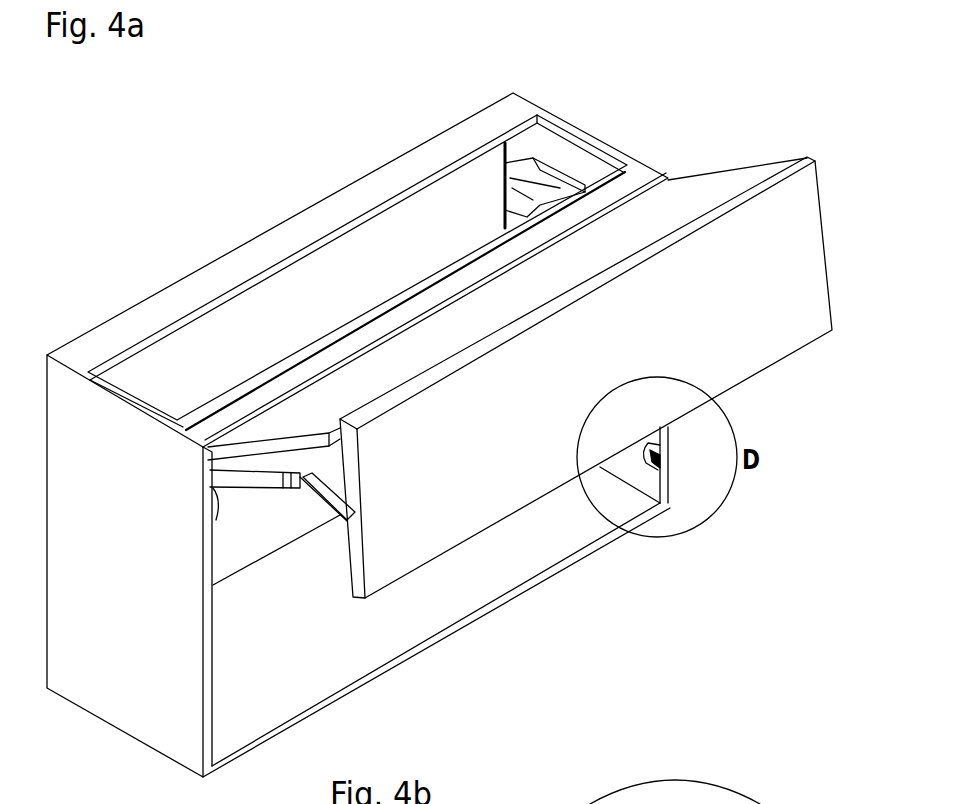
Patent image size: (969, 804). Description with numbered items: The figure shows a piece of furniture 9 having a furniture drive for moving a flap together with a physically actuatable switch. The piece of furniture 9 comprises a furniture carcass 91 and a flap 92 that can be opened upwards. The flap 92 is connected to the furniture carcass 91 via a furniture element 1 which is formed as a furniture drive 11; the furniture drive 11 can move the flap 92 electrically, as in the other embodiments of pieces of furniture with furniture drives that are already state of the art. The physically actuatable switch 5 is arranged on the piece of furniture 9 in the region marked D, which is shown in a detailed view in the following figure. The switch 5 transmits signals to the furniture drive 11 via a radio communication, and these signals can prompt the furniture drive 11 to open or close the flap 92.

The piece of furniture 9 is at (572, 111).
The furniture carcass 91 is at (117, 685).
The flap 92 is at (722, 372).
The furniture element 1 is at (632, 149).
The furniture drive 11 is at (550, 190).
The physically actuatable switch 5 is at (670, 430).